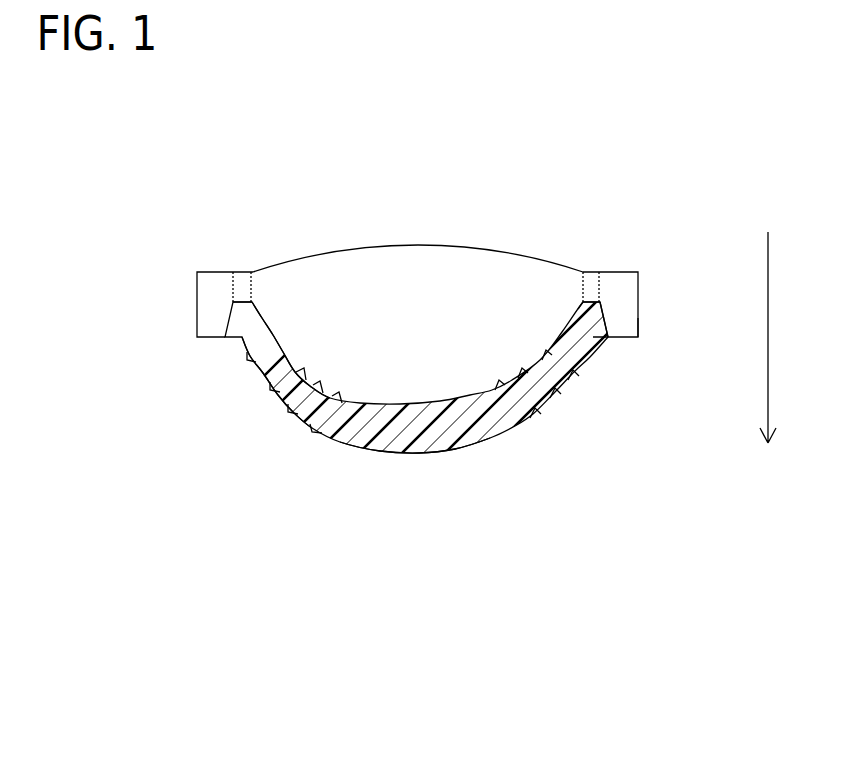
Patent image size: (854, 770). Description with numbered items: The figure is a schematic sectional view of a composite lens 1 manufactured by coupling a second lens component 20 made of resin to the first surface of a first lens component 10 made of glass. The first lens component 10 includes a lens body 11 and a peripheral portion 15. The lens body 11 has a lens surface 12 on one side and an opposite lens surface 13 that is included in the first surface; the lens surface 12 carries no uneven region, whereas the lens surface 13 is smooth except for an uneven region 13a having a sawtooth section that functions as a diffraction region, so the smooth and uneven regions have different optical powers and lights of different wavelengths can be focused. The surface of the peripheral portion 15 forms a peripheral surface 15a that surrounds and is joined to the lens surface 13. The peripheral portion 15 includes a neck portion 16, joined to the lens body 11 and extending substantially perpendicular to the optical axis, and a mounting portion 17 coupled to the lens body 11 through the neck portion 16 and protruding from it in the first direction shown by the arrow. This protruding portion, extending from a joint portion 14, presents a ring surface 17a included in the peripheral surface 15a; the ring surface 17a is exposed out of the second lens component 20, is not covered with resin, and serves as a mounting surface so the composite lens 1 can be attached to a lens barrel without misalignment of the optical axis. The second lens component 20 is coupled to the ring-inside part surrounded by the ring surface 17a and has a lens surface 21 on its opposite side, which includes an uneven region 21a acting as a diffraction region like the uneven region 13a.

The composite lens 1 is at (436, 129).
The first lens component 10 is at (545, 161).
The lens body 11 is at (560, 272).
The lens surface 12 is at (303, 254).
The lens surface 13 is at (266, 357).
The uneven region 13a is at (337, 404).
The joint portion 14 is at (582, 302).
The peripheral portion 15 is at (657, 208).
The peripheral surface 15a is at (585, 337).
The neck portion 16 is at (589, 270).
The mounting portion 17 is at (633, 270).
The ring surface 17a is at (625, 340).
The second lens component 20 is at (457, 440).
The lens surface 21 is at (408, 453).
The uneven region 21a is at (282, 410).